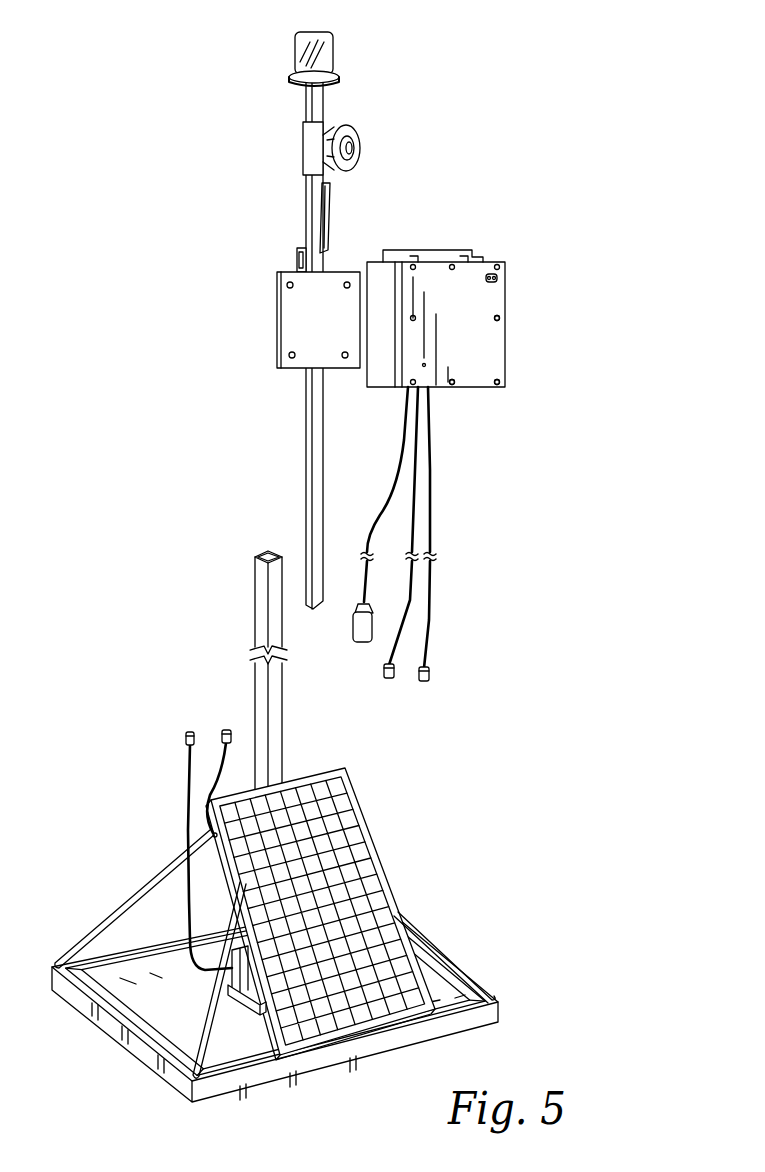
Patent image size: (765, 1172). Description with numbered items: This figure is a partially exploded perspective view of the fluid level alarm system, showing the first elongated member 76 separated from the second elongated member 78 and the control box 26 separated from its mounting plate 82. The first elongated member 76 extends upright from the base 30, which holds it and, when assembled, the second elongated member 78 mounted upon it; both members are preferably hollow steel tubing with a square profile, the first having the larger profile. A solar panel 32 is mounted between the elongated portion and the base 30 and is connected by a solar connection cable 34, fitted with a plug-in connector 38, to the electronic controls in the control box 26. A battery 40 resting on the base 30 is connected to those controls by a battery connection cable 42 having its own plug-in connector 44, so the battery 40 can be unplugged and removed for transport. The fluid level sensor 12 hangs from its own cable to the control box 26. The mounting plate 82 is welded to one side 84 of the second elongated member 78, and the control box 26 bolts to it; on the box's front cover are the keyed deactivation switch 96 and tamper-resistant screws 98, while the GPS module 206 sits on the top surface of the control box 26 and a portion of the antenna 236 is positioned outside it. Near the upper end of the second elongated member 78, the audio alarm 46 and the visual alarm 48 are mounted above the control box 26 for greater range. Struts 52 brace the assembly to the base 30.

The fluid level sensor 12 is at (356, 620).
The control box 26 is at (512, 298).
The base 30 is at (88, 998).
The solar panel 32 is at (381, 858).
The solar connection cable 34 is at (433, 508).
The plug-in connector 38 is at (430, 682).
The battery 40 is at (240, 1000).
The battery connection cable 42 is at (402, 610).
The plug-in connector 44 is at (385, 680).
The audio alarm 46 is at (361, 150).
The visual alarm 48 is at (334, 47).
The strut 52 is at (135, 890).
The first elongated member 76 is at (258, 605).
The second elongated member 78 is at (308, 452).
The mounting plate 82 is at (332, 333).
The side 84 is at (329, 428).
The keyed deactivation switch 96 is at (498, 278).
The screws 98 is at (452, 380).
The GPS module 206 is at (436, 250).
The antenna 236 is at (331, 210).